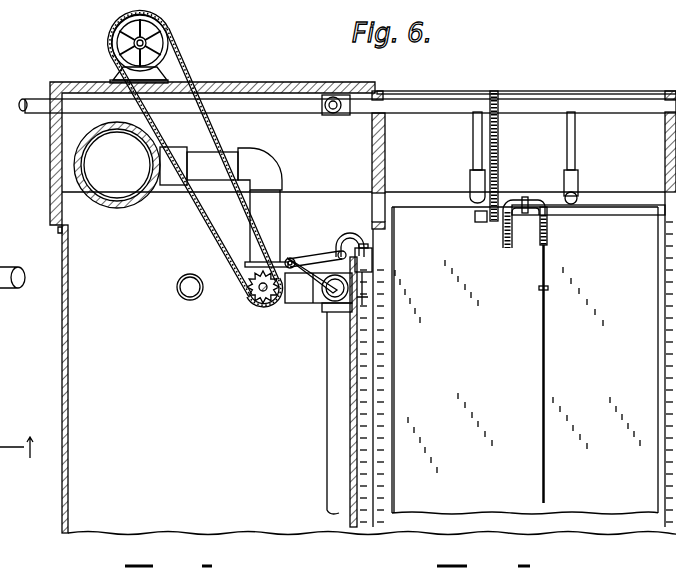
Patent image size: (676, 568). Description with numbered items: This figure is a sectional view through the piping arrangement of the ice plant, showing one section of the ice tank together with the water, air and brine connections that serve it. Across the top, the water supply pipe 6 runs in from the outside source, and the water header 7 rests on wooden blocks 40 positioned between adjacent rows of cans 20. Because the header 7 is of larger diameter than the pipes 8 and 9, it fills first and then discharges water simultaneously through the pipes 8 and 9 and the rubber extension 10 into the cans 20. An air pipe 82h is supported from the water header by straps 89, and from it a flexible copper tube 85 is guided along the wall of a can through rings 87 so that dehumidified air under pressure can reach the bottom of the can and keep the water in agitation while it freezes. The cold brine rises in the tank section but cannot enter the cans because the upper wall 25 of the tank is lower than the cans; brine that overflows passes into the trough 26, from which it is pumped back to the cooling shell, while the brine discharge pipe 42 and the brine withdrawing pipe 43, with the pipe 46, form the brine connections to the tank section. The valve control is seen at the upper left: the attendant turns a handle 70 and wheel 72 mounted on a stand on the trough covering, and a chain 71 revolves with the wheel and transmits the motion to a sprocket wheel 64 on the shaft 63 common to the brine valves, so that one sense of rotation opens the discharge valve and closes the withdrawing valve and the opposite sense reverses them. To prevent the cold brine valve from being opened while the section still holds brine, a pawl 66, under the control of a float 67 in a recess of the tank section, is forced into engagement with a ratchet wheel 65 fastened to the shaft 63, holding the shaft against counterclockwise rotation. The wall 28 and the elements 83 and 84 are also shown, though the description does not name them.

The pipe 6 is at (37, 99).
The water header 7 is at (613, 110).
The pipe 8 is at (473, 139).
The pipe 9 is at (575, 145).
The rubber extension 10 is at (470, 181).
The can 20 is at (530, 359).
The upper wall of tank 25 is at (357, 432).
The trough 26 is at (369, 363).
The wall 28 is at (70, 428).
The wooden block 40 is at (50, 147).
The brine discharge pipe 42 is at (178, 192).
The brine withdrawing pipe 43 is at (179, 280).
The pipe 46 is at (12, 567).
The shaft 63 is at (253, 304).
The sprocket wheel 64 is at (240, 262).
The ratchet wheel 65 is at (263, 304).
The pawl 66 is at (285, 258).
The float 67 is at (372, 251).
The handle 70 is at (133, 16).
The chain 71 is at (202, 219).
The wheel 72 is at (172, 33).
The air pipe 82h is at (612, 216).
The pipe 83 is at (503, 228).
The pipe 84 is at (551, 239).
The flexible copper tube 85 is at (547, 451).
The ring 87 is at (538, 291).
The strap 89 is at (498, 155).